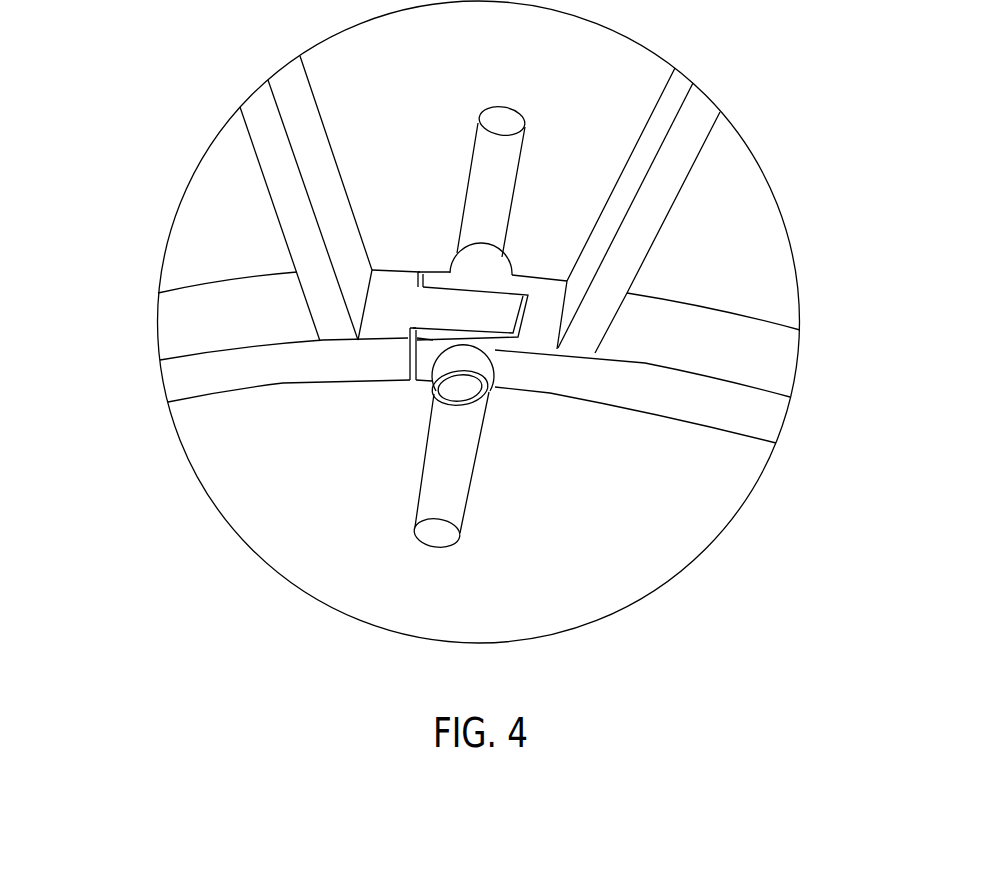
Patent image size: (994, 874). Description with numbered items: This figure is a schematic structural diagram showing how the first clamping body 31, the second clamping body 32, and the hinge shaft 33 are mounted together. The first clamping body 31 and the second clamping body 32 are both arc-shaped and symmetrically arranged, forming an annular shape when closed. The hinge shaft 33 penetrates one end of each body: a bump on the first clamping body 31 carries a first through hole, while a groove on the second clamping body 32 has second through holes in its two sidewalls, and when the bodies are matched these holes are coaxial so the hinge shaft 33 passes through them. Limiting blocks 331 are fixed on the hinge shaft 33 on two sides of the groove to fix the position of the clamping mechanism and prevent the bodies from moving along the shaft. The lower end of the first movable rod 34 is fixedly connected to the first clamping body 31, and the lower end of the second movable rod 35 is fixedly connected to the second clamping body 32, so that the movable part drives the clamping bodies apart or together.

The first clamping body 31 is at (193, 327).
The second clamping body 32 is at (753, 362).
The hinge shaft 33 is at (440, 498).
The limiting block 331 is at (465, 360).
The first movable rod 34 is at (293, 202).
The second movable rod 35 is at (652, 202).